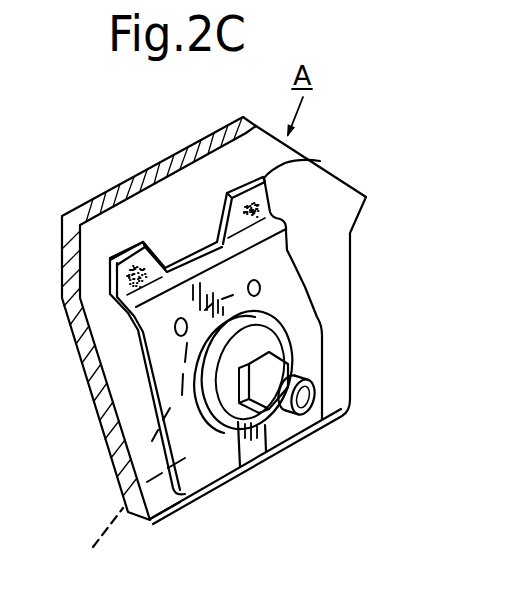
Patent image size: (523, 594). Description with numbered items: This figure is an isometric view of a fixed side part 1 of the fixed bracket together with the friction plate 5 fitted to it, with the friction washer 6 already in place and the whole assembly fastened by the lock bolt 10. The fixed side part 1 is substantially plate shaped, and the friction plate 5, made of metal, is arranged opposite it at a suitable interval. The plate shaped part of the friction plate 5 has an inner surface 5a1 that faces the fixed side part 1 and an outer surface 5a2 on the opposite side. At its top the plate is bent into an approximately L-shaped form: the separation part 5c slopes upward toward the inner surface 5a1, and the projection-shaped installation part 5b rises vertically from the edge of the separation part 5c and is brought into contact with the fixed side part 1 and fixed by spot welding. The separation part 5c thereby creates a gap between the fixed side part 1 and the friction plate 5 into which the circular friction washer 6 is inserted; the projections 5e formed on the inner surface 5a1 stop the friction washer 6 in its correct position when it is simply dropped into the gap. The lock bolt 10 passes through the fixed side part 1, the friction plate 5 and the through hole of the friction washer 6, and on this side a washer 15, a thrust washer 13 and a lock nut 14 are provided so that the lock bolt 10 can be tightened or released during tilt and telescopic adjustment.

The fixed side part 1 is at (78, 378).
The friction plate 5 is at (303, 302).
The inner surface 5a1 is at (90, 535).
The outer surface 5a2 is at (198, 472).
The installation part 5b is at (143, 241).
The separation part 5c is at (277, 215).
The projections 5e is at (262, 286).
The friction washer 6 is at (108, 481).
The lock bolt 10 is at (313, 412).
The thrust washer 13 is at (283, 340).
The lock nut 14 is at (283, 358).
The washer 15 is at (241, 440).